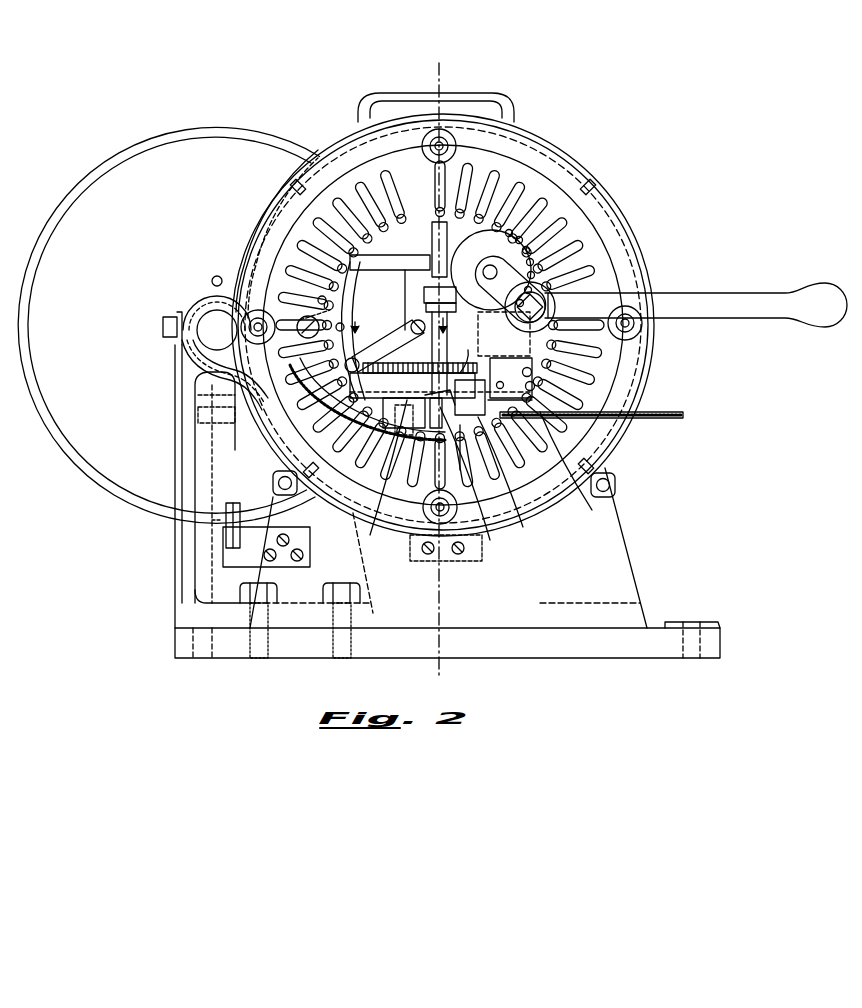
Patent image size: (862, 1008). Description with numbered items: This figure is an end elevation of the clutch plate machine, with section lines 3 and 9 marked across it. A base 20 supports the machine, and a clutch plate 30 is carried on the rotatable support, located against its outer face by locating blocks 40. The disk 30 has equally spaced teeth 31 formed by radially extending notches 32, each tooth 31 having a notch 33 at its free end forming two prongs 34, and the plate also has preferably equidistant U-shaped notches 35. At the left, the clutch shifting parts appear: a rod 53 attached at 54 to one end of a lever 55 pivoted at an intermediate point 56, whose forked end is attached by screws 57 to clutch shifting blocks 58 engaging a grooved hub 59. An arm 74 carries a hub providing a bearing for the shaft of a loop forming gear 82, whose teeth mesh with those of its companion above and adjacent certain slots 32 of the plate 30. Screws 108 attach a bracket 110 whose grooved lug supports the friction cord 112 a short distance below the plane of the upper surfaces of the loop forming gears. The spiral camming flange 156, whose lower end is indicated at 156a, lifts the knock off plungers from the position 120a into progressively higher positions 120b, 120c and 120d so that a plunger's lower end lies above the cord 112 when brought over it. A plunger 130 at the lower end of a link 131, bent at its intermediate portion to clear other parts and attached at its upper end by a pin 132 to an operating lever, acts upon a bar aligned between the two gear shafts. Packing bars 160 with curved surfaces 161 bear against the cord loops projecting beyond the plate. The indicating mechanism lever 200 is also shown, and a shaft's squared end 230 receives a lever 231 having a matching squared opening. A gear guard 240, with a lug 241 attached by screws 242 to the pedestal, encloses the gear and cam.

The section line 3- 3 is at (439, 63).
The section line 9- 9 is at (397, 334).
The base 20 is at (715, 644).
The clutch plate 30 is at (495, 155).
The teeth 31 is at (520, 270).
The notches 32 is at (425, 492).
The notch 33 is at (540, 256).
The prongs 34 is at (540, 262).
The U-shaped notches 35 is at (640, 338).
The locating blocks 40 is at (300, 190).
The rod 53 is at (236, 520).
The attachment point 54 is at (215, 527).
The lever 55 is at (212, 470).
The pivot 56 is at (205, 425).
The screws 57 is at (163, 322).
The clutch shifting blocks 58 is at (246, 268).
The grooved hub 59 is at (214, 276).
The arm 74 is at (360, 365).
The loop forming gear 82 is at (482, 470).
The screws 108 is at (535, 365).
The bracket 110 is at (540, 388).
The friction cord 112 is at (598, 420).
The knock off plunger position 120a is at (378, 475).
The knock off plunger position 120b is at (485, 483).
The knock off plunger position 120c is at (524, 477).
The knock off plunger position 120d is at (586, 468).
The plunger 130 is at (440, 403).
The link 131 is at (492, 345).
The pin 132 is at (424, 258).
The camming flange 156 is at (467, 360).
The lower end of cam 156a is at (431, 412).
The packing bars 160 is at (288, 323).
The curved surface 161 is at (362, 448).
The lever 200 is at (420, 359).
The squared end 230 is at (590, 296).
The lever 231 is at (706, 307).
The gear guard 240 is at (512, 110).
The lug 241 is at (410, 560).
The screws 242 is at (426, 556).